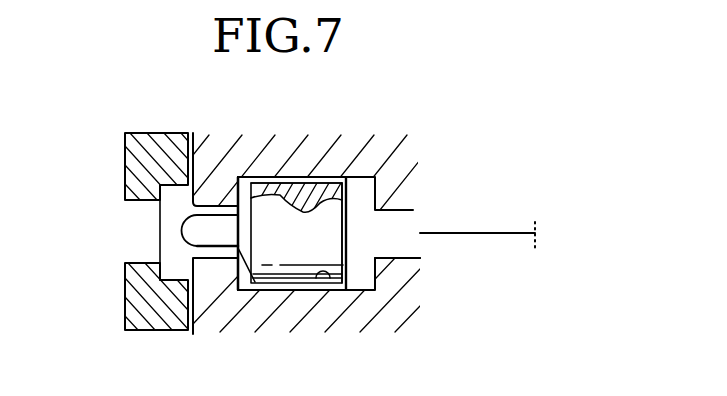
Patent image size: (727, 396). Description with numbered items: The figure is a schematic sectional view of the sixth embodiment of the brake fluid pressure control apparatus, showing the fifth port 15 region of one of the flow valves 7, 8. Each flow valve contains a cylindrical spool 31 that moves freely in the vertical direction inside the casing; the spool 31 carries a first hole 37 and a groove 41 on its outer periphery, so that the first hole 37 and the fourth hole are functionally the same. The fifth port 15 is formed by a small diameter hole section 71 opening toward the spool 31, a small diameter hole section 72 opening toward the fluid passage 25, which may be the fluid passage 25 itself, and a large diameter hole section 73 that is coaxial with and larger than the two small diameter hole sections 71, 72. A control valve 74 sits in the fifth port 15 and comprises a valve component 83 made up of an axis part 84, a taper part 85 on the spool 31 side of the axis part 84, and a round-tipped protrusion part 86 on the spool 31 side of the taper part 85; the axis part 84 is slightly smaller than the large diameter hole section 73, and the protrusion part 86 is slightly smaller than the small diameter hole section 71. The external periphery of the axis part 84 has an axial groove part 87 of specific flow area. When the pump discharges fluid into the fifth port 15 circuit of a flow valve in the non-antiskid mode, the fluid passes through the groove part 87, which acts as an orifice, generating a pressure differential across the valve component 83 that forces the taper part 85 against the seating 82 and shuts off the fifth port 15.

The flow valve 7 is at (292, 101).
The flow valve 8 is at (298, 98).
The fifth port 15 is at (187, 249).
The fluid passage 25 is at (492, 233).
The spool 31 is at (140, 163).
The first hole 37 is at (138, 207).
The groove 41 is at (163, 275).
The small diameter hole section 71 is at (240, 250).
The small diameter hole section 72 is at (390, 260).
The large diameter hole section 73 is at (325, 278).
The control valve 74 is at (384, 182).
The seating 82 is at (260, 252).
The valve component 83 is at (347, 235).
The axis part 84 is at (297, 188).
The taper part 85 is at (238, 185).
The protrusion part 86 is at (182, 228).
The groove part 87 is at (269, 190).